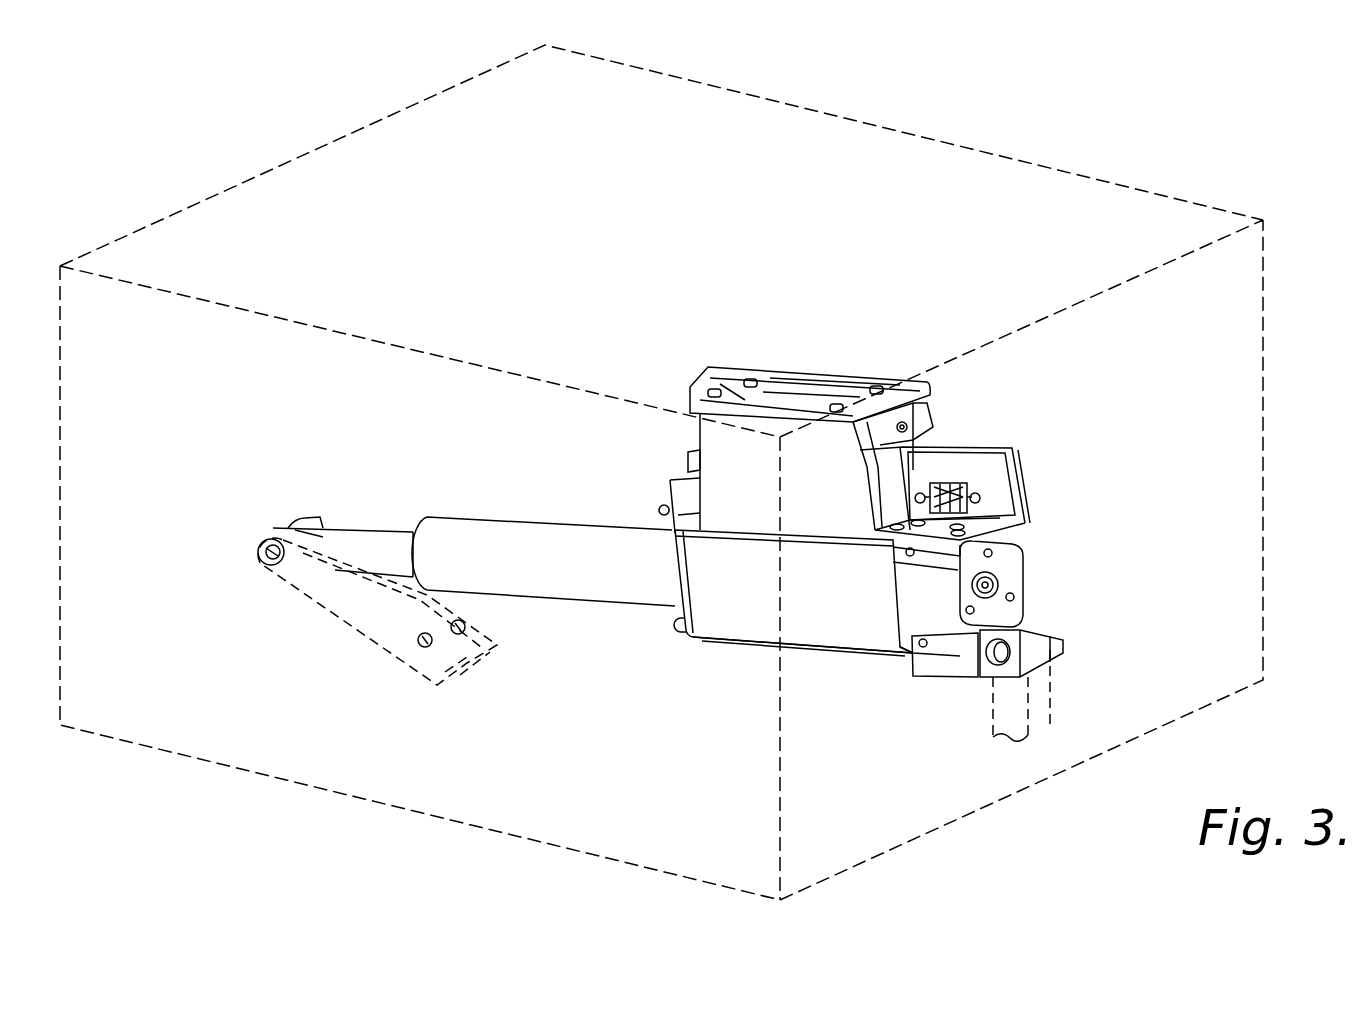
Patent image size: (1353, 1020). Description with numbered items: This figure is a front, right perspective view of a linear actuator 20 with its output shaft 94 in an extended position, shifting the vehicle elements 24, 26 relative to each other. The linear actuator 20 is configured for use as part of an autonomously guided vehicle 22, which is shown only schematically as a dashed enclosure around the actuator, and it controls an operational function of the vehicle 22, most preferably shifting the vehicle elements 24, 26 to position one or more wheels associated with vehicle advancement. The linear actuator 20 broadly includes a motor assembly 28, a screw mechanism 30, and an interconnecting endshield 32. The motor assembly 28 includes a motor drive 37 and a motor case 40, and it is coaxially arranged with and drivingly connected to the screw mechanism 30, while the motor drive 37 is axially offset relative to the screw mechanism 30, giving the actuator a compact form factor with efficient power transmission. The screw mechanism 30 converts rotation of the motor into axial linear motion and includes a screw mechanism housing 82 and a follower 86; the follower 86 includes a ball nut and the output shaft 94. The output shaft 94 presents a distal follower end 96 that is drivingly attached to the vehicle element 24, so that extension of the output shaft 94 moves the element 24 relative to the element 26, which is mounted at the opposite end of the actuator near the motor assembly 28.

The linear actuator 20 is at (792, 402).
The autonomously guided vehicle 22 is at (994, 118).
The vehicle element 24 is at (357, 608).
The vehicle element 26 is at (1040, 698).
The motor assembly 28 is at (841, 573).
The screw mechanism 30 is at (427, 577).
The interconnecting endshield 32 is at (678, 617).
The motor drive 37 is at (893, 470).
The motor case 40 is at (763, 618).
The screw mechanism housing 82 is at (530, 532).
The follower 86 is at (382, 540).
The output shaft 94 is at (323, 540).
The distal follower end 96 is at (270, 532).